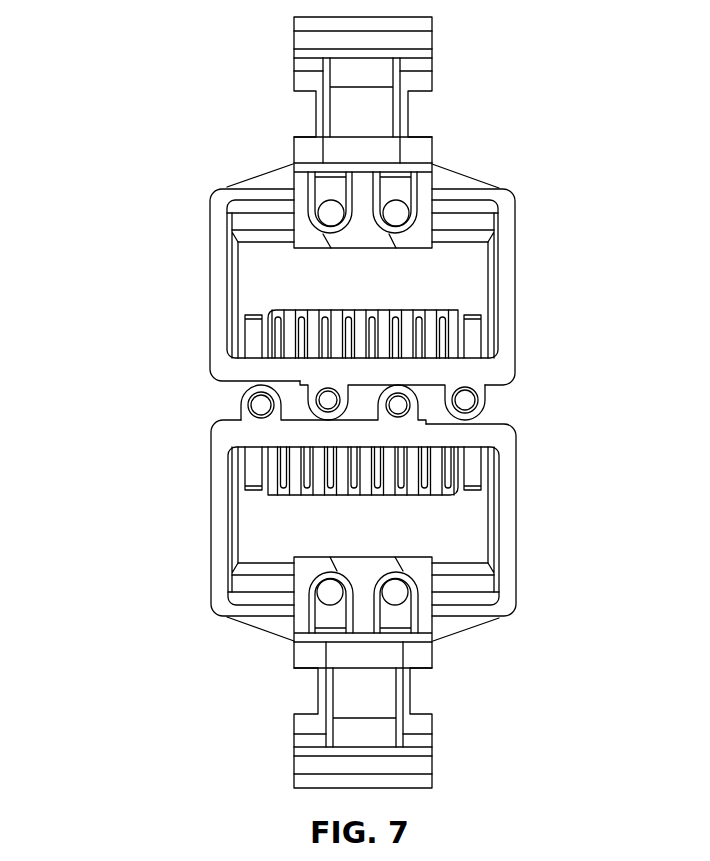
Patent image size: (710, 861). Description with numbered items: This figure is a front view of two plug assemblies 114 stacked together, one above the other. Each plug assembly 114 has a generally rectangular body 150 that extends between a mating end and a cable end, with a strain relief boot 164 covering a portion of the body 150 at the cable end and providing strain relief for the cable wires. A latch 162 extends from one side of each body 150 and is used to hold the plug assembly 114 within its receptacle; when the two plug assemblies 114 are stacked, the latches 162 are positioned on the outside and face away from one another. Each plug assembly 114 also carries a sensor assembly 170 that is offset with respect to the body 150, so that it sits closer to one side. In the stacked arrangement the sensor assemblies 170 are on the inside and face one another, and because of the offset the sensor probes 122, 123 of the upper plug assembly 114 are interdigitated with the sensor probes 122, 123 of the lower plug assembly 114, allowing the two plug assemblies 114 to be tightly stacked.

The plug assembly 114 is at (152, 272).
The sensor probe 122 is at (328, 398).
The sensor probe 123 is at (468, 397).
The body 150 is at (492, 282).
The latch 162 is at (412, 69).
The strain relief boot 164 is at (220, 221).
The sensor assembly 170 is at (215, 408).